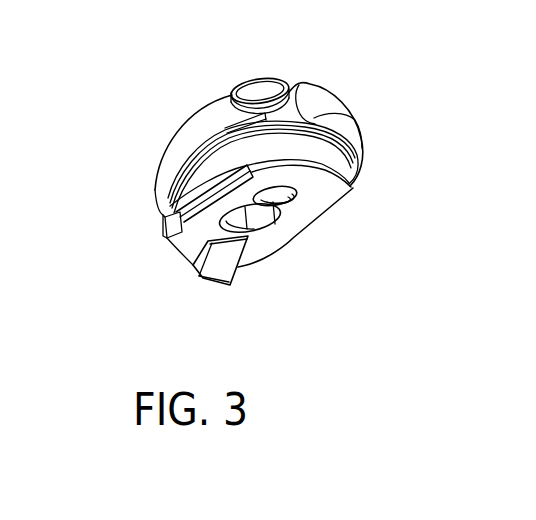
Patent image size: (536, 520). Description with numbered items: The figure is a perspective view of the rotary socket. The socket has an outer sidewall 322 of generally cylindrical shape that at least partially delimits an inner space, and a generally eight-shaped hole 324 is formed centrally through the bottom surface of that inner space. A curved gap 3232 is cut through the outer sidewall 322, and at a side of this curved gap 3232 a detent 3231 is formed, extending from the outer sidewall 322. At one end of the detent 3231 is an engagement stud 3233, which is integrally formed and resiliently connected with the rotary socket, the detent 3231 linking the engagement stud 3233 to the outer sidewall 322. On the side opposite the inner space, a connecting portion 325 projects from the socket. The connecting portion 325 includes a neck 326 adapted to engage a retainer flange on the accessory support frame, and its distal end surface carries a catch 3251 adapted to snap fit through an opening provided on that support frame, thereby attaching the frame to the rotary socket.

The detent 3231 is at (210, 115).
The engagement stud 3233 is at (253, 90).
The outer sidewall 322 is at (322, 98).
The curved gap 3232 is at (322, 117).
The neck 326 is at (196, 112).
The connecting portion 325 is at (335, 193).
The hole 324 is at (260, 222).
The catch 3251 is at (220, 265).